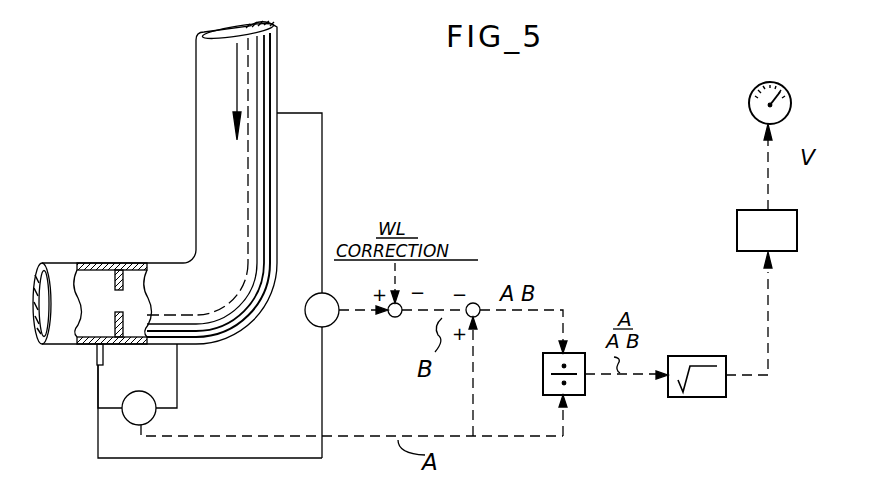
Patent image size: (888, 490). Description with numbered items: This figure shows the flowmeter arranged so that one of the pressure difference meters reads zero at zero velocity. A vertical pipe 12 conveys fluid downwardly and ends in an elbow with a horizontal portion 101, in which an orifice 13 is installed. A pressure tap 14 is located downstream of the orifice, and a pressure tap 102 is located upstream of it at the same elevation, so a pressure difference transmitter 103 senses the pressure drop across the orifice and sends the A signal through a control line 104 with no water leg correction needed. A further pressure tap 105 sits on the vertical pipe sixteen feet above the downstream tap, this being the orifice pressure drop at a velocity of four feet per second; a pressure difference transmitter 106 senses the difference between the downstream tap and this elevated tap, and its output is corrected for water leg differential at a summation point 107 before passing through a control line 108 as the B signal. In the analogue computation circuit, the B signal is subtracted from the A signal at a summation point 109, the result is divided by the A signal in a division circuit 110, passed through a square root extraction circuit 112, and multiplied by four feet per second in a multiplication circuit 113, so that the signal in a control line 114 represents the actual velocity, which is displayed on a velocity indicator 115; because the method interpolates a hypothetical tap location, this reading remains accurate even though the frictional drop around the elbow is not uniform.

The vertical pipe 12 is at (210, 70).
The orifice 13 is at (134, 270).
The pressure tap 14 is at (96, 355).
The horizontal portion 101 is at (62, 270).
The pressure tap 102 is at (178, 380).
The pressure difference transmitter 103 is at (160, 415).
The control line 104 is at (366, 436).
The pressure tap 105 is at (322, 113).
The pressure difference transmitter 106 is at (312, 325).
The summation point 107 is at (397, 318).
The control line 108 is at (422, 318).
The summation point 109 is at (479, 304).
The division circuit 110 is at (572, 358).
The square root extraction circuit 112 is at (690, 364).
The multiplication circuit 113 is at (735, 233).
The control line 114 is at (760, 176).
The velocity indicator 115 is at (750, 90).